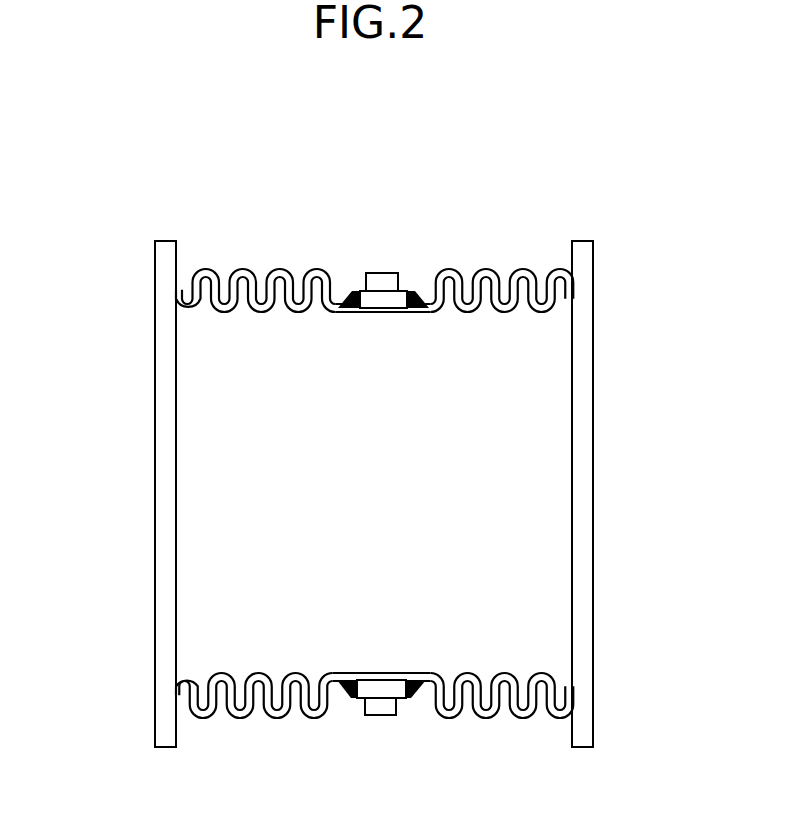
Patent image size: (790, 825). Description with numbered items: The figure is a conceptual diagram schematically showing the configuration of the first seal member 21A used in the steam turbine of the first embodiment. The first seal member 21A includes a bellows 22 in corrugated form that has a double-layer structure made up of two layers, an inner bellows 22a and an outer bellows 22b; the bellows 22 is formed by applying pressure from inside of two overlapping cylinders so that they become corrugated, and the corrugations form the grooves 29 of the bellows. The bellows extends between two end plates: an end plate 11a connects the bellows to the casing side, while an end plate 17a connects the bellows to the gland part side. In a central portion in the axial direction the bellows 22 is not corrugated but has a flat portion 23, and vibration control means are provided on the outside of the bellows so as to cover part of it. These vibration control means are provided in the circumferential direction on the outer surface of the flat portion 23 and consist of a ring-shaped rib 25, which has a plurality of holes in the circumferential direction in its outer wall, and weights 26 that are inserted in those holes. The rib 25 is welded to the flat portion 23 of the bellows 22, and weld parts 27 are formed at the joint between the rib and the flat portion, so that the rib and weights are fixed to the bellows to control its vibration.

The end plate 11a is at (155, 612).
The end plate 17a is at (594, 611).
The first seal member 21A is at (388, 156).
The bellows 22 is at (100, 153).
The inner bellows 22a is at (234, 280).
The outer bellows 22b is at (250, 284).
The grooves 29 is at (264, 276).
The flat portion 23 is at (392, 313).
The rib 25 is at (408, 291).
The weights 26 is at (386, 273).
The weld parts 27 is at (350, 292).